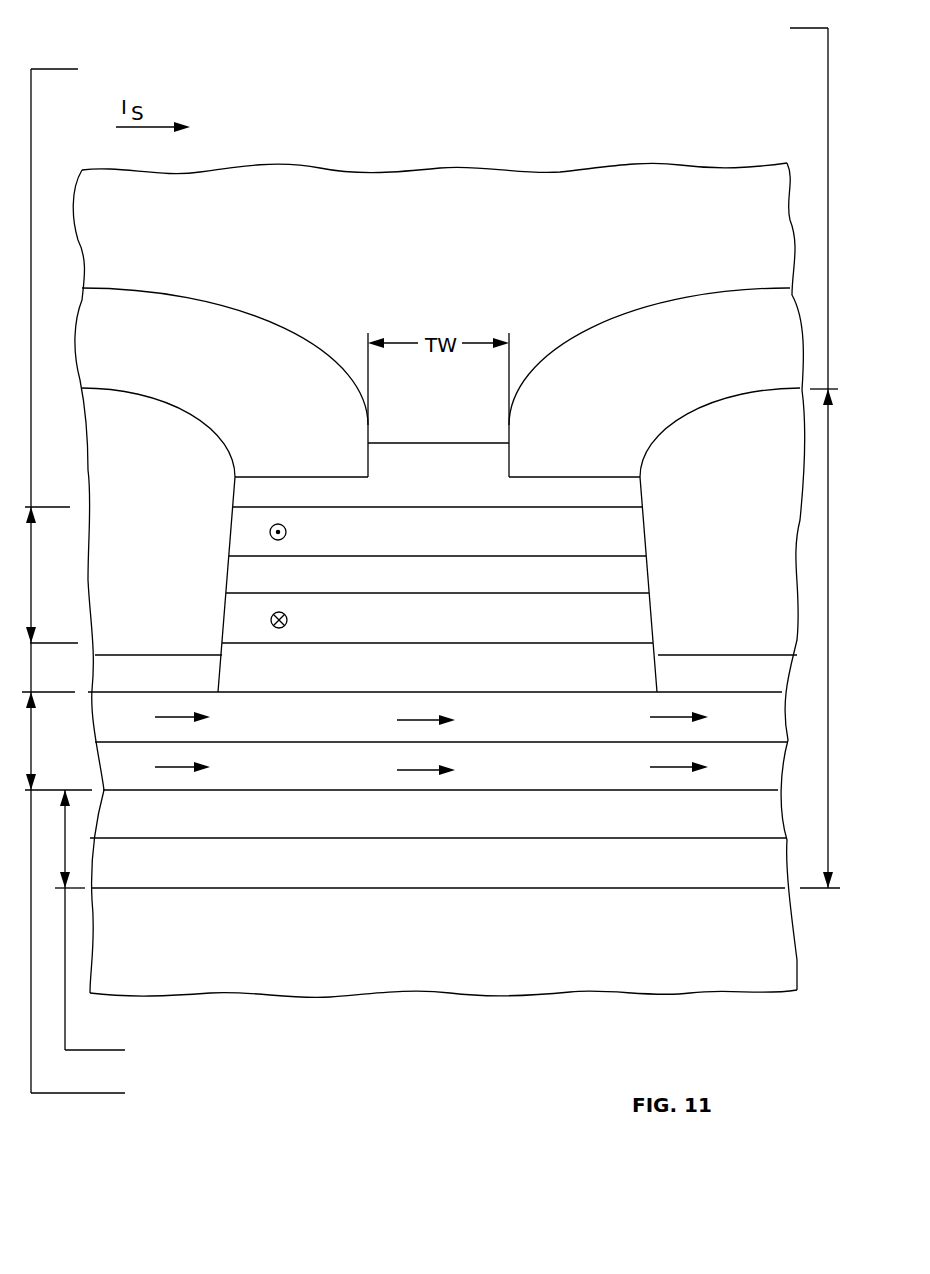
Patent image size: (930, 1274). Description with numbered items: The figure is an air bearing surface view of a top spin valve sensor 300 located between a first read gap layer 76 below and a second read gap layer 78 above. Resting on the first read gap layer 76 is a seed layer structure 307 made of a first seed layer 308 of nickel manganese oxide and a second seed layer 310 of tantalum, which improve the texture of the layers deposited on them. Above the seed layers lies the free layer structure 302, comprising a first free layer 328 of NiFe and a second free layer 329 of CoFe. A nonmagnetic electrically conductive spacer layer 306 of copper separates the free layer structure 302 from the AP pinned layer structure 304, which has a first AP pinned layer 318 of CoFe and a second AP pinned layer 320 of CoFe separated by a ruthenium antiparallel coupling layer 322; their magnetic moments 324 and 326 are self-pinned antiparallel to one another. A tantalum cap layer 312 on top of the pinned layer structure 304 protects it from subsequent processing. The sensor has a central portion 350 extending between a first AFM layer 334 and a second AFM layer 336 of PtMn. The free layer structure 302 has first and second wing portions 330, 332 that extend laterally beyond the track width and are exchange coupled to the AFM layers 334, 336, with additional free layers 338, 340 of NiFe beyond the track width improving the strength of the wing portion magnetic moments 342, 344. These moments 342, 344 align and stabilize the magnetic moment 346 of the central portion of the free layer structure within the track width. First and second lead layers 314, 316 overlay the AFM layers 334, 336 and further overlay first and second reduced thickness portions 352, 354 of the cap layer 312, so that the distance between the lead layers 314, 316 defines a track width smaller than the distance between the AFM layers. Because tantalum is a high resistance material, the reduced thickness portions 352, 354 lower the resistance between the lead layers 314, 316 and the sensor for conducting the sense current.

The top spin valve sensor 300 is at (650, 453).
The AP pinned layer structure 304 is at (254, 576).
The free layer structure 302 is at (238, 900).
The seed layer structure 307 is at (256, 927).
The second read gap layer 78 is at (478, 263).
The first read gap layer 76 is at (568, 955).
The first lead layer 314 is at (135, 305).
The second lead layer 316 is at (740, 305).
The central portion 350 is at (426, 443).
The first reduced thickness portion 352 is at (298, 477).
The second reduced thickness portion 354 is at (585, 477).
The cap layer 312 is at (575, 505).
The second AP pinned layer 320 is at (575, 548).
The antiparallel coupling layer 322 is at (575, 591).
The first AP pinned layer 318 is at (575, 635).
The spacer layer 306 is at (575, 683).
The magnetic moment of second AP pinned layer 326 is at (270, 533).
The magnetic moment of first AP pinned layer 324 is at (271, 620).
The first AFM layer 334 is at (160, 514).
The second AFM layer 336 is at (746, 514).
The additional free layer 338 is at (112, 660).
The additional free layer 340 is at (757, 660).
The first wing portion 330 is at (104, 690).
The second wing portion 332 is at (770, 690).
The second free layer 329 is at (575, 733).
The first free layer 328 is at (575, 782).
The second seed layer 310 is at (575, 831).
The first seed layer 308 is at (575, 880).
The magnetic moment of first wing portion 342 is at (172, 718).
The magnetic moment of second wing portion 344 is at (675, 718).
The magnetic moment of central portion of free layer structure 346 is at (432, 719).